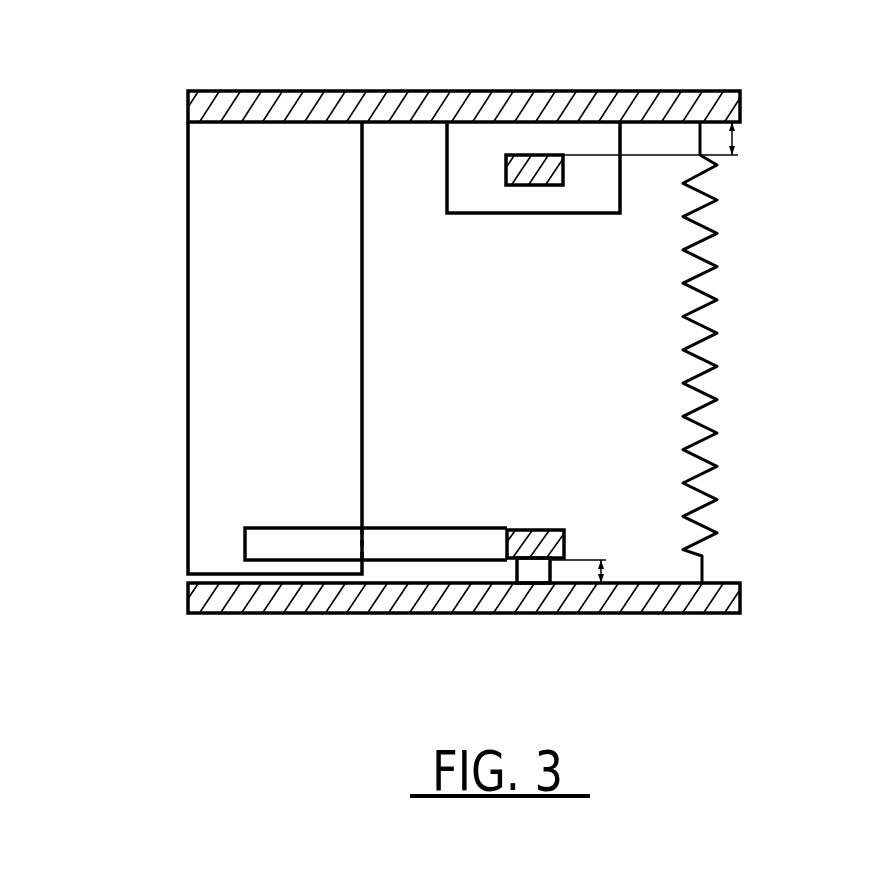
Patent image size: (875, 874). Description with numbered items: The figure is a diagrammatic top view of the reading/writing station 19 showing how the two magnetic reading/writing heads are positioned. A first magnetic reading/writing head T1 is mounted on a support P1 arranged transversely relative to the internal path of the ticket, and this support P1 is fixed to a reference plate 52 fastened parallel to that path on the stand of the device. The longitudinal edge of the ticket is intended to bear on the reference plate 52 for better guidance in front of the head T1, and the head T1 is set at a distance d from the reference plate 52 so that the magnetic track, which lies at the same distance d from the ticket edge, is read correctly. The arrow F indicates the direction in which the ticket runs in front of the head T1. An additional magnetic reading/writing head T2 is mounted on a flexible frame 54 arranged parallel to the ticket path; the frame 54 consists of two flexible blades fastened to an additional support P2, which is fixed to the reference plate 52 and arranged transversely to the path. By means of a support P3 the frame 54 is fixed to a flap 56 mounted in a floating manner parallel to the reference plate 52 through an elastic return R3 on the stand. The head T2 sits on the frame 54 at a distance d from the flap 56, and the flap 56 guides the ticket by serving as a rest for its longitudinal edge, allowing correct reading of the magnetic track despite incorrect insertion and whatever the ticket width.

The reference plate 52 is at (407, 90).
The flap 56 is at (419, 613).
The support P1 is at (588, 145).
The additional support P2 is at (229, 210).
The support P3 is at (537, 573).
The magnetic reading/writing head T1 is at (532, 187).
The additional magnetic reading/writing head T2 is at (525, 530).
The elastic return R3 is at (717, 430).
The flexible frame 54 is at (265, 541).
The switch assembly 19 is at (539, 348).
The arrow indicating direction of run F is at (766, 338).
The distance d is at (655, 352).